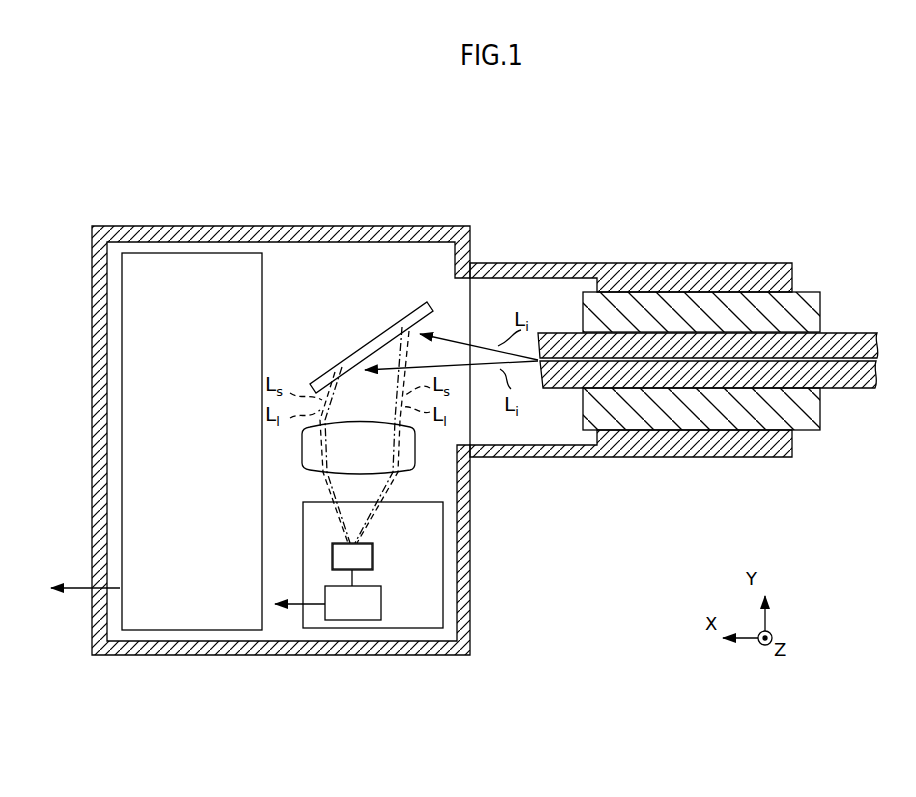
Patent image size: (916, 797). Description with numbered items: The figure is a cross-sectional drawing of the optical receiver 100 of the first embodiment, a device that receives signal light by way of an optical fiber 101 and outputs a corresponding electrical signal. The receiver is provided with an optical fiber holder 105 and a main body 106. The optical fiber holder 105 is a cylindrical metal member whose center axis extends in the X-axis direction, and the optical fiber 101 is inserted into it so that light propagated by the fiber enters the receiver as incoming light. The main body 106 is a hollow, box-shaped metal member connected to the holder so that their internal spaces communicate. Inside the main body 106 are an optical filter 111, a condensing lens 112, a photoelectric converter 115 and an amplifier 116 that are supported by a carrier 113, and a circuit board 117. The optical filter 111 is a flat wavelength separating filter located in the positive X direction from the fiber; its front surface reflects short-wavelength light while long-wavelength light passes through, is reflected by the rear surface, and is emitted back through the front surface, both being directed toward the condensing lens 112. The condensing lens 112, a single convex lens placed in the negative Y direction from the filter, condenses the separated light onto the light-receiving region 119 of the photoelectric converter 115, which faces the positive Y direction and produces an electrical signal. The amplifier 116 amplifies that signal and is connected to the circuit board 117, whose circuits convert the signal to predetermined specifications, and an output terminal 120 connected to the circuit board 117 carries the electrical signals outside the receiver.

The optical receiver 100 is at (790, 148).
The optical fiber 101 is at (840, 333).
The optical fiber holder 105 is at (750, 263).
The main body 106 is at (120, 226).
The optical filter 111 is at (386, 329).
The condensing lens 112 is at (415, 455).
The carrier 113 is at (443, 527).
The photoelectric converter 115 is at (373, 557).
The amplifier 116 is at (360, 620).
The circuit board 117 is at (207, 630).
The light-receiving region 119 is at (356, 541).
The output terminal 120 is at (72, 593).